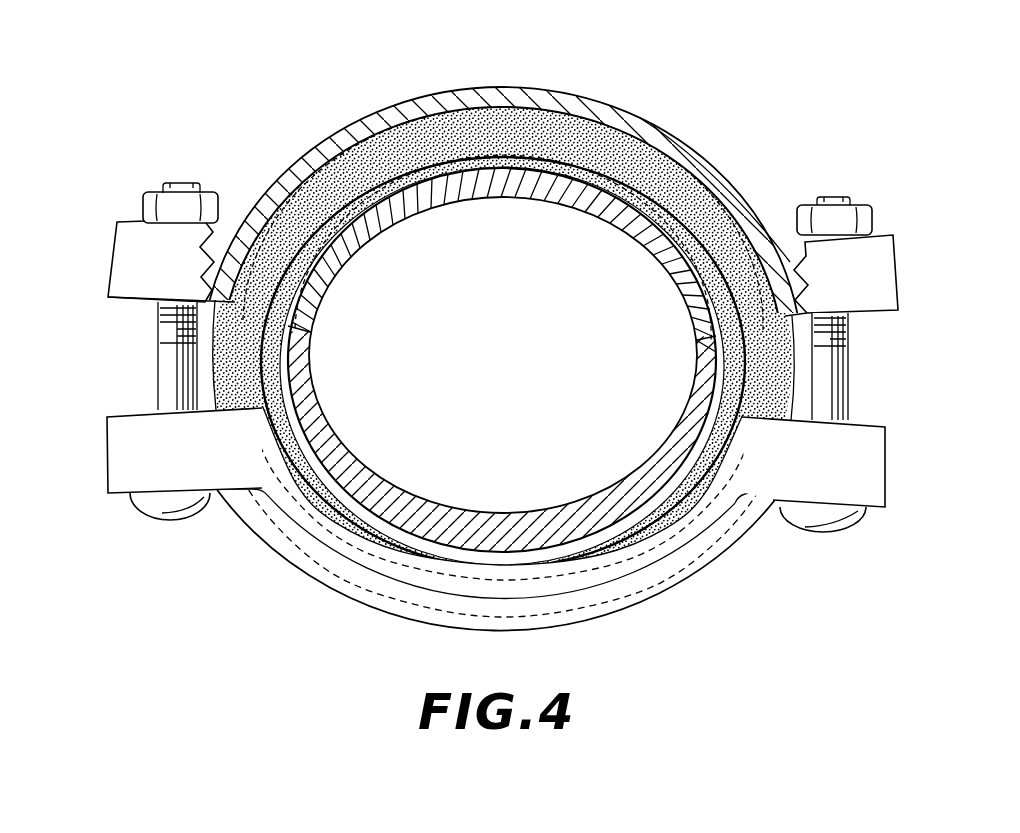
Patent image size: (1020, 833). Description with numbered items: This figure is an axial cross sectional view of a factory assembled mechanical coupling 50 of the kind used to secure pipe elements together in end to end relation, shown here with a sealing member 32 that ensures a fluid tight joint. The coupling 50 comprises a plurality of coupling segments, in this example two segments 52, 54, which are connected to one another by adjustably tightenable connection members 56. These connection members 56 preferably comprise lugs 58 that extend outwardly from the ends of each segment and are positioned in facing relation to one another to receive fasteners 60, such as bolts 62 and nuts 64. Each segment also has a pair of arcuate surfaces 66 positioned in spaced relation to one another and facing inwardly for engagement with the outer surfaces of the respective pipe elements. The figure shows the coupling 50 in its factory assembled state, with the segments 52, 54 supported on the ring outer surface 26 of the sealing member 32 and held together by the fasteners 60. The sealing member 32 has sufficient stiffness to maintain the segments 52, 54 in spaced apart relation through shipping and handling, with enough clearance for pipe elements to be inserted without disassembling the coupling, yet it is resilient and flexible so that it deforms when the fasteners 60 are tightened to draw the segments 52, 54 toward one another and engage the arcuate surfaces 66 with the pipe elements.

The ring outer surface 26 is at (510, 107).
The sealing member 32 is at (440, 125).
The coupling 50 is at (722, 127).
The coupling segment 52 is at (293, 157).
The coupling segment 54 is at (687, 570).
The connection member 56 is at (100, 355).
The lug 58 is at (132, 257).
The fastener 60 is at (160, 380).
The bolt 62 is at (160, 513).
The nut 64 is at (147, 207).
The arcuate surface 66 is at (427, 567).